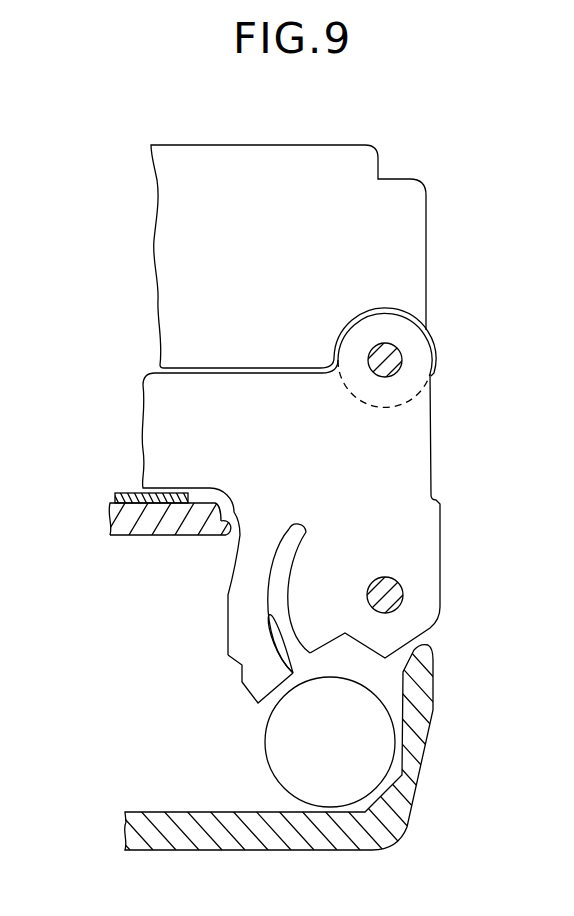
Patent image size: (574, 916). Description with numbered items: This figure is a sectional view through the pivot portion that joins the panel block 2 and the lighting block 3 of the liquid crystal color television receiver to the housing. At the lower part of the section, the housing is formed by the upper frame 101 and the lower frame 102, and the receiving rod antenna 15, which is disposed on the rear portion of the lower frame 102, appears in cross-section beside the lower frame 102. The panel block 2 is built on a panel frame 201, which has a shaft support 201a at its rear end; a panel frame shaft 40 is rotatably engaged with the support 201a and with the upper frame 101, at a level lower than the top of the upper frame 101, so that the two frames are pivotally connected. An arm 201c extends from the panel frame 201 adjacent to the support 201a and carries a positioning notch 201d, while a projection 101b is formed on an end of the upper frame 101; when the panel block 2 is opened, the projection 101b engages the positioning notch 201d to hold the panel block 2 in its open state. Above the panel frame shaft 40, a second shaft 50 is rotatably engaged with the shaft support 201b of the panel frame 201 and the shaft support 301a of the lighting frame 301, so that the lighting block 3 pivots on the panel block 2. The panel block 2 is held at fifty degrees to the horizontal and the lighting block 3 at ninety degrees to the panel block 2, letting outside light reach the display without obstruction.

The lighting block 3 is at (325, 242).
The lighting frame 301 is at (416, 228).
The shaft support 301a is at (403, 310).
The shaft support 201b is at (420, 347).
The shaft 50 is at (397, 370).
The panel frame 201 is at (150, 430).
The panel block 2 is at (298, 508).
The upper frame 101 is at (120, 519).
The projection 101b is at (228, 532).
The shaft support 201a is at (431, 548).
The panel frame shaft 40 is at (390, 596).
The arm 201c is at (233, 610).
The positioning notch 201d is at (235, 664).
The receiving rod antenna 15 is at (273, 743).
The lower frame 102 is at (215, 840).